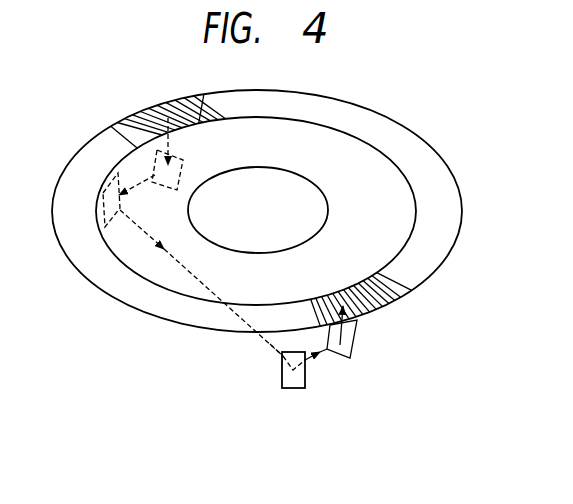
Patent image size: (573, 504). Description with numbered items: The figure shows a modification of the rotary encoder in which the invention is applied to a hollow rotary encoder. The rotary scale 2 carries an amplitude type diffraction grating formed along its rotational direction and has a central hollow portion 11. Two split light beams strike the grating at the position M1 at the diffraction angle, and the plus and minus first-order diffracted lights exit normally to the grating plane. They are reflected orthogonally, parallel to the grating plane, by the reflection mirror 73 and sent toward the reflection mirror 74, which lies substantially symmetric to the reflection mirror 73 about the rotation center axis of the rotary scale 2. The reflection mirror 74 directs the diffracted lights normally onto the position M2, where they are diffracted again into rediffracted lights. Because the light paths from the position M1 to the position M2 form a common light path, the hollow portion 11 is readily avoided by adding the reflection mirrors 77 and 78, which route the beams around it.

The rotary scale 2 is at (277, 211).
The hollow portion 11 is at (265, 200).
The position M1 on the diffraction grating M1 is at (168, 105).
The position M2 on the diffraction grating M2 is at (372, 305).
The reflection mirror 73 is at (176, 156).
The reflection mirror 74 is at (357, 349).
The reflection mirror 77 is at (182, 250).
The reflection mirror 78 is at (298, 391).